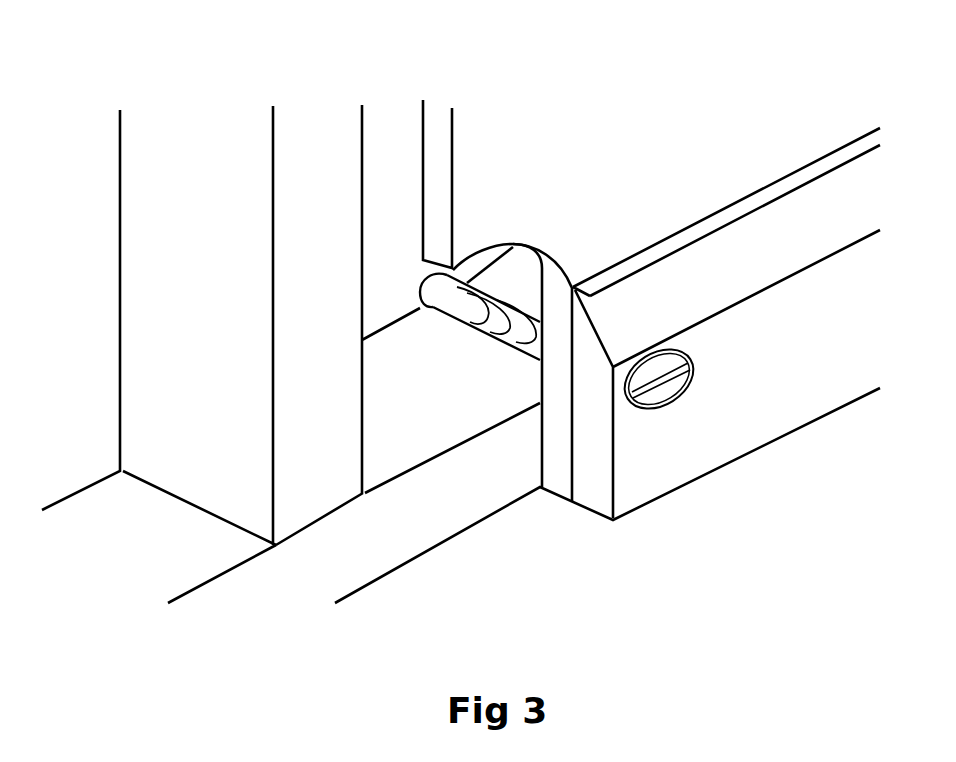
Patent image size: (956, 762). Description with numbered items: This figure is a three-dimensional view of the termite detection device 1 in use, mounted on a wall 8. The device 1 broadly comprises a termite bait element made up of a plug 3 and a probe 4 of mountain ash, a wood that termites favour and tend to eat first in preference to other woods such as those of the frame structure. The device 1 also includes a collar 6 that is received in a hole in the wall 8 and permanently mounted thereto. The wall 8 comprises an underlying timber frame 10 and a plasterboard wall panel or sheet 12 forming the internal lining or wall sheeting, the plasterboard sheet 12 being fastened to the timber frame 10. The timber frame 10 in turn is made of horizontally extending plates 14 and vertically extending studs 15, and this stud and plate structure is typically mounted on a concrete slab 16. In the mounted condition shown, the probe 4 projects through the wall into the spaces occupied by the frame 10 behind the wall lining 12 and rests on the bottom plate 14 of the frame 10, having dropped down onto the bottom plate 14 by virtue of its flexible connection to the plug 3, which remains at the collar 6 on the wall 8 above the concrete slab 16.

The device 1 is at (403, 290).
The plug 3 is at (658, 392).
The probe 4 is at (487, 338).
The collar 6 is at (688, 353).
The wall 8 is at (595, 177).
The timber frame 10 is at (225, 147).
The plasterboard wall panel 12 is at (430, 118).
The plate 14 is at (145, 522).
The stud 15 is at (182, 308).
The concrete slab 16 is at (538, 568).